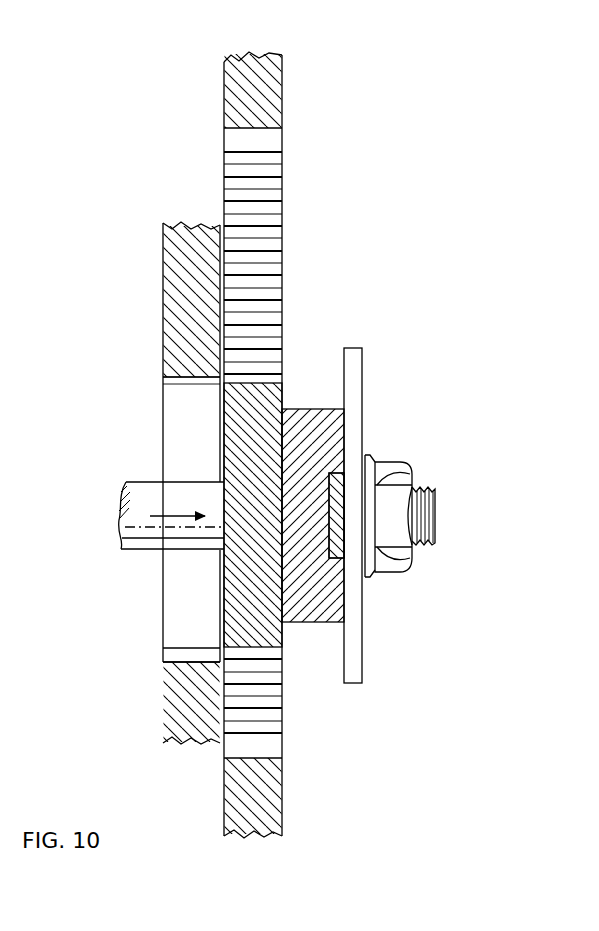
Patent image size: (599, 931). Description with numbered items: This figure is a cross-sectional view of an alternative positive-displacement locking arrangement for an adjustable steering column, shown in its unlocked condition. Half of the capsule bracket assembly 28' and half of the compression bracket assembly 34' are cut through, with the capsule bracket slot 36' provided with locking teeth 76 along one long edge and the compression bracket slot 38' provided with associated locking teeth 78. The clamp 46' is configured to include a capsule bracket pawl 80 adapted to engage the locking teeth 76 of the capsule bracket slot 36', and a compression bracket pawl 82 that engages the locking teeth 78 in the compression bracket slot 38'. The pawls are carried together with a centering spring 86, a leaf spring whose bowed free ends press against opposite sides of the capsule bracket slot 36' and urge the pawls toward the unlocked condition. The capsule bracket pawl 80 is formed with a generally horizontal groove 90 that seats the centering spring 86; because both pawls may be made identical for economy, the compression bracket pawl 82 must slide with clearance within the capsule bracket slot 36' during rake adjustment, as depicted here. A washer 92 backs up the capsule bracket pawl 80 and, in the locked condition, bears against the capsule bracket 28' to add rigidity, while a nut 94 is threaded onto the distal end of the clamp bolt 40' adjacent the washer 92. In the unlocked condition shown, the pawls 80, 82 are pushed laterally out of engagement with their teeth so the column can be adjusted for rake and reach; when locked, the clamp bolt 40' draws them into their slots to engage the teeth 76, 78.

The capsule bracket assembly 28' is at (203, 78).
The compression bracket assembly 34' is at (141, 483).
The capsule bracket slot 36' is at (305, 790).
The compression bracket slot 38' is at (143, 387).
The clamp bolt 40' is at (137, 536).
The clamp 46' is at (389, 265).
The locking teeth 76 is at (274, 182).
The locking teeth 78 is at (195, 650).
The capsule bracket pawl 80 is at (303, 617).
The compression bracket pawl 82 is at (273, 393).
The centering spring 86 is at (340, 527).
The groove 90 is at (347, 490).
The washer 92 is at (355, 660).
The nut 94 is at (400, 553).